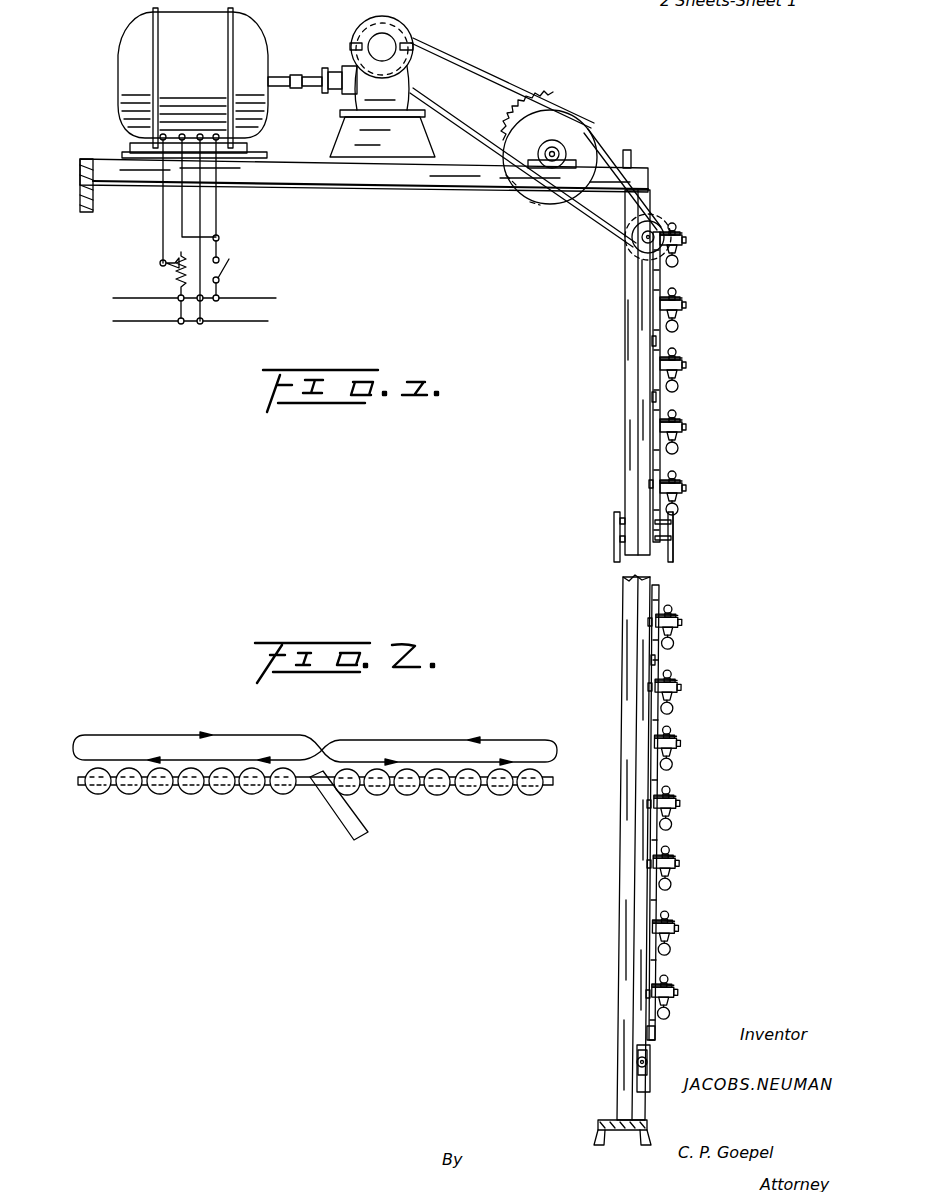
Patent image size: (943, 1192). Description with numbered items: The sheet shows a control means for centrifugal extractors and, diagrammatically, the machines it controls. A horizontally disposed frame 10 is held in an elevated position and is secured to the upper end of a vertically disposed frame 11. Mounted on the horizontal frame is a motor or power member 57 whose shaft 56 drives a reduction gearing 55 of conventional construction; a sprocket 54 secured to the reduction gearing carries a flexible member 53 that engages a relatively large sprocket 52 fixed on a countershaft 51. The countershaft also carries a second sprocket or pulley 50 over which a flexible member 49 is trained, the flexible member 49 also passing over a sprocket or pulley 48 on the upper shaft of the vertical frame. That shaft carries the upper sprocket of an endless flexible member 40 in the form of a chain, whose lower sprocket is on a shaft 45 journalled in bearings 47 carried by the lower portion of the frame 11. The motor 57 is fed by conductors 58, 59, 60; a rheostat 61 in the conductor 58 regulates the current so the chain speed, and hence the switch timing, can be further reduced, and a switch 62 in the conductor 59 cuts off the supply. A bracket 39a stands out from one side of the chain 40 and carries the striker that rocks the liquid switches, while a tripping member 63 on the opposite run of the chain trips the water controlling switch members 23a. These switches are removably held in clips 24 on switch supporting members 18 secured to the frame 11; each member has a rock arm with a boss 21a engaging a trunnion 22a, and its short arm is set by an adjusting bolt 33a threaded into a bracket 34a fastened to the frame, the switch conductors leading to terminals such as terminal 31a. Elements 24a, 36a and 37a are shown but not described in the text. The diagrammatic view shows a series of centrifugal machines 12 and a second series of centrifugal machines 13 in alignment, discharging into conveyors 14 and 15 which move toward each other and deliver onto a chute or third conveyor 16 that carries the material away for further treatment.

In FIG. 1, the horizontally disposed frame 10 is at (328, 190).
In FIG. 1, the vertically disposed frame 11 is at (624, 296).
In FIG. 2, the centrifugal machines 12 is at (352, 793).
In FIG. 2, the centrifugal machines 13 is at (282, 795).
In FIG. 2, the conveyor 14 is at (548, 800).
In FIG. 2, the conveyor 15 is at (112, 790).
In FIG. 2, the chute or third conveyor 16 is at (356, 838).
In FIG. 1, the switch supporting members 18 is at (686, 366).
In FIG. 1, the boss 21a is at (653, 486).
In FIG. 1, the trunnion 22a is at (686, 241).
In FIG. 1, the water controlling switch members 23a is at (679, 261).
In FIG. 1, the clips 24 is at (678, 252).
In FIG. 1, the clamp 24a is at (678, 377).
In FIG. 1, the terminal 31a is at (655, 340).
In FIG. 1, the adjusting bolt 33a is at (676, 226).
In FIG. 1, the bracket 34a is at (661, 338).
In FIG. 1, the bar 36a is at (673, 545).
In FIG. 1, the bar 37a is at (673, 560).
In FIG. 1, the bracket 39a is at (672, 537).
In FIG. 2, the flexible member 40 is at (378, 735).
In FIG. 1, the shaft 45 is at (637, 1064).
In FIG. 1, the bearings 47 is at (637, 1057).
In FIG. 1, the sprocket or pulley 48 is at (654, 226).
In FIG. 1, the flexible member 49 is at (614, 226).
In FIG. 1, the second sprocket or pulley 50 is at (515, 125).
In FIG. 1, the countershaft 51 is at (566, 150).
In FIG. 1, the sprocket 52 is at (572, 122).
In FIG. 1, the flexible member 53 is at (492, 70).
In FIG. 1, the sprocket 54 is at (400, 30).
In FIG. 1, the reduction gearing 55 is at (364, 33).
In FIG. 1, the shaft 56 is at (310, 72).
In FIG. 1, the motor or power member 57 is at (262, 50).
In FIG. 1, the conductor 58 is at (160, 221).
In FIG. 1, the conductor 59 is at (219, 228).
In FIG. 1, the conductor 60 is at (205, 262).
In FIG. 1, the rheostat 61 is at (178, 279).
In FIG. 1, the switch 62 is at (222, 283).
In FIG. 1, the tripping member 63 is at (614, 540).